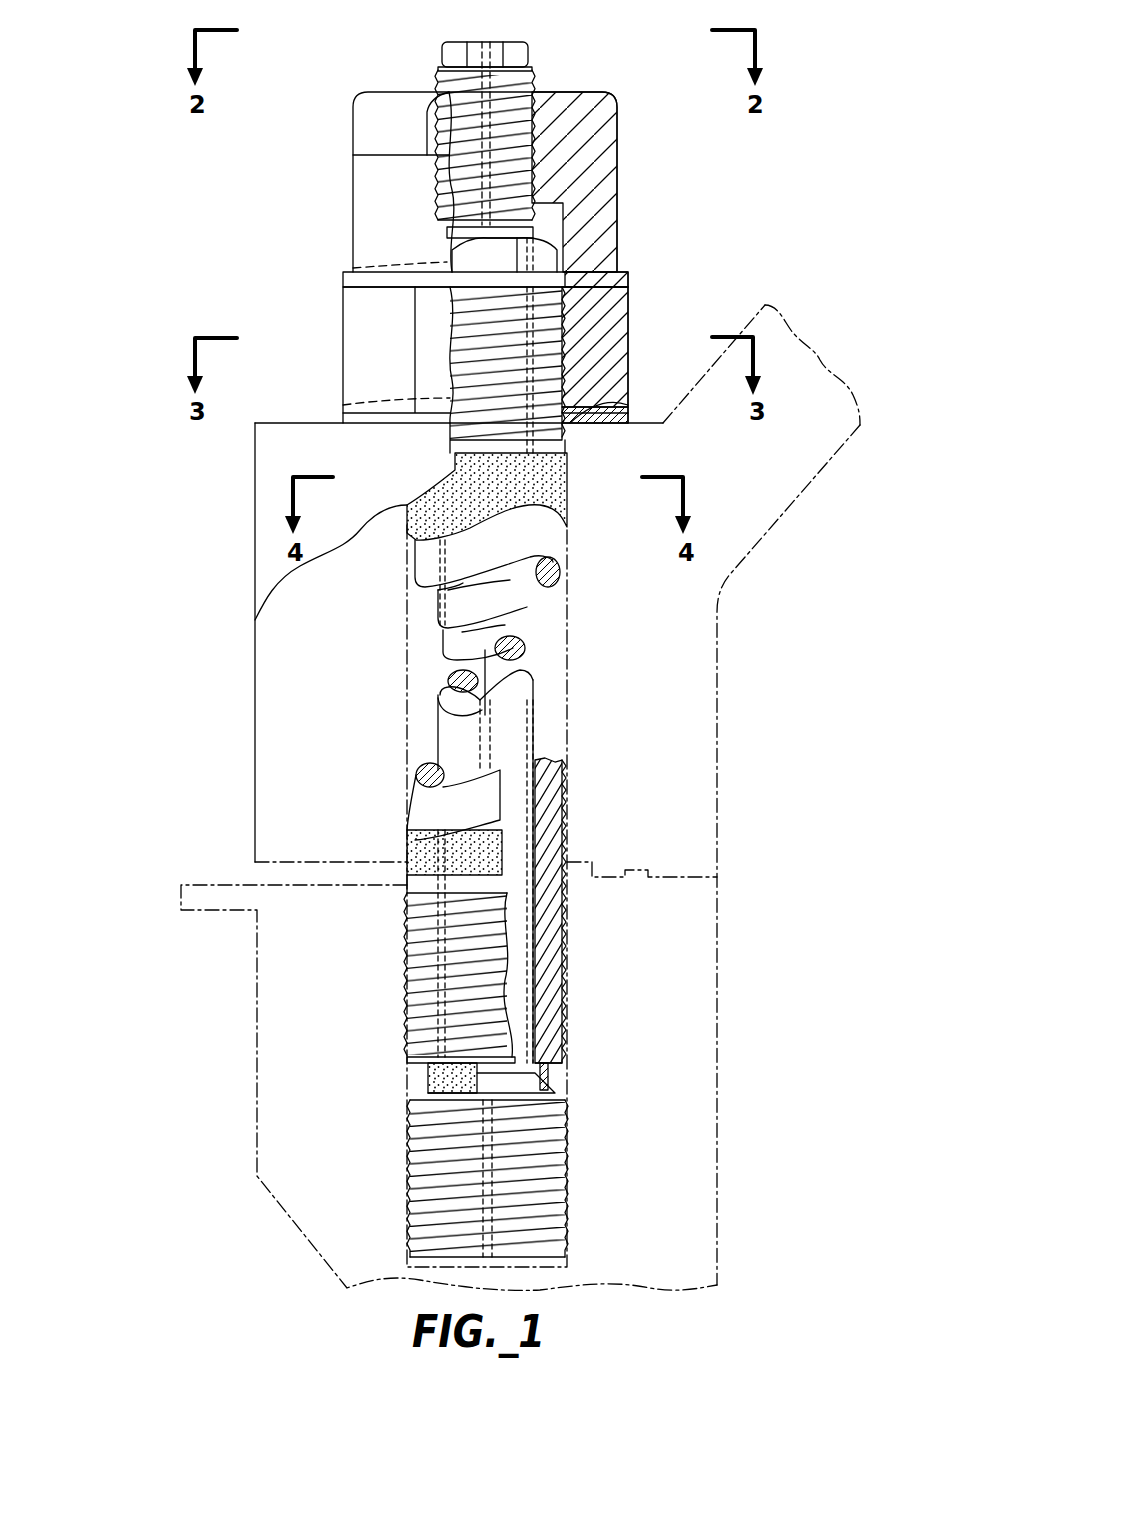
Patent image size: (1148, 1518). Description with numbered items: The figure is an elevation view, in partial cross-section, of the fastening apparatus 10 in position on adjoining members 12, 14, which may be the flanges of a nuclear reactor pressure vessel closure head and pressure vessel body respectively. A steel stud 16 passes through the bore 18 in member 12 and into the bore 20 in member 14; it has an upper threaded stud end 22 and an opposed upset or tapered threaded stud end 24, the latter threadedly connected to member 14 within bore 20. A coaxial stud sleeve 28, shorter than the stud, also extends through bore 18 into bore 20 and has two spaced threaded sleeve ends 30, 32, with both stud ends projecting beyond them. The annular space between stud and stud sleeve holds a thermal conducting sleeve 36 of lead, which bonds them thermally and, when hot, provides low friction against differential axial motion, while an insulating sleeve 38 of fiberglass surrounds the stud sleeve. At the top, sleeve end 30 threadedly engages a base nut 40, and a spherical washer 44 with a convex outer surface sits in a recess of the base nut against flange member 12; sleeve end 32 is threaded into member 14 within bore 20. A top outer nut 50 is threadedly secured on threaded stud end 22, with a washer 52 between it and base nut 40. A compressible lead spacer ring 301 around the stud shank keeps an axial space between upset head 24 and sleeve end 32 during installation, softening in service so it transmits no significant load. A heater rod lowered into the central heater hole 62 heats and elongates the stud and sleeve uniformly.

The apparatus 10 is at (634, 298).
The member 12 is at (255, 483).
The member 14 is at (257, 990).
The stud 16 is at (450, 690).
The bore 18 is at (567, 620).
The bore 20 is at (567, 990).
The threaded stud end 22 is at (530, 80).
The tapered threaded stud end 24 is at (565, 1150).
The stud sleeve 28 is at (547, 545).
The threaded sleeve end 30 is at (455, 345).
The threaded sleeve end 32 is at (407, 1000).
The thermal conducting sleeve 36 is at (453, 605).
The insulating sleeve 38 is at (548, 483).
The base nut 40 is at (628, 348).
The washer 44 is at (612, 405).
The top outer nut 50 is at (375, 200).
The washer 52 is at (620, 282).
The heater hole 62 is at (530, 681).
The compressible spacer ring 301 is at (428, 1075).